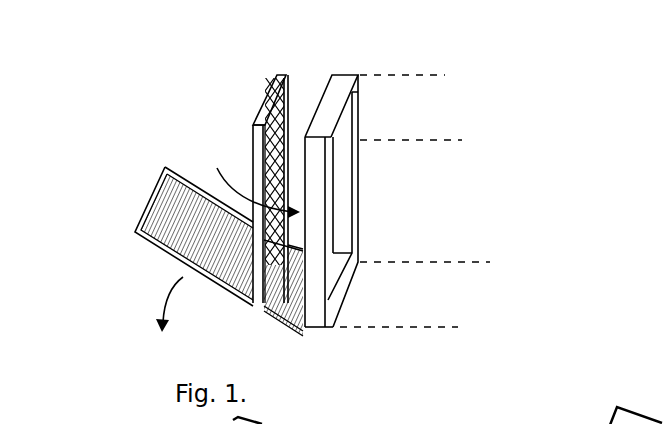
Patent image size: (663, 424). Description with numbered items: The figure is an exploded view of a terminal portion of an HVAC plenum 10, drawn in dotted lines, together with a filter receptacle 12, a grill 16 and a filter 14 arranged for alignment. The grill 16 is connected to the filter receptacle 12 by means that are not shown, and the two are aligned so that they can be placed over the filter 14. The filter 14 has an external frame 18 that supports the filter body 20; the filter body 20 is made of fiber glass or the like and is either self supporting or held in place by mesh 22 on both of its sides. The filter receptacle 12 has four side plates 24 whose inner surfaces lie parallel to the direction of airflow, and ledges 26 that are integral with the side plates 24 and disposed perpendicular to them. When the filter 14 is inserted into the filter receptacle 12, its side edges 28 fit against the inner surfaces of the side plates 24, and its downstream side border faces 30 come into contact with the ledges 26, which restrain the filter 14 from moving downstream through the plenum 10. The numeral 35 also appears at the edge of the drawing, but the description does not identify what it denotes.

The HVAC plenum 10 is at (443, 77).
The filter receptacle 12 is at (340, 77).
The filter 14 is at (303, 320).
The grill 16 is at (155, 248).
The external frame 18 is at (265, 107).
The filter body 20 is at (282, 327).
The mesh 22 is at (283, 115).
The side plates 24 is at (345, 192).
The ledges 26 is at (328, 170).
The side edges 28 is at (257, 138).
The downstream side border faces 30 is at (286, 92).
The adjacent figure element 35 is at (197, 420).